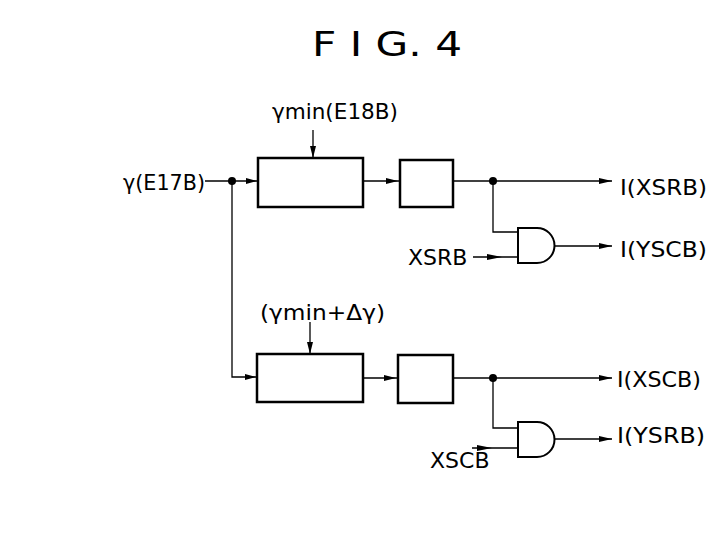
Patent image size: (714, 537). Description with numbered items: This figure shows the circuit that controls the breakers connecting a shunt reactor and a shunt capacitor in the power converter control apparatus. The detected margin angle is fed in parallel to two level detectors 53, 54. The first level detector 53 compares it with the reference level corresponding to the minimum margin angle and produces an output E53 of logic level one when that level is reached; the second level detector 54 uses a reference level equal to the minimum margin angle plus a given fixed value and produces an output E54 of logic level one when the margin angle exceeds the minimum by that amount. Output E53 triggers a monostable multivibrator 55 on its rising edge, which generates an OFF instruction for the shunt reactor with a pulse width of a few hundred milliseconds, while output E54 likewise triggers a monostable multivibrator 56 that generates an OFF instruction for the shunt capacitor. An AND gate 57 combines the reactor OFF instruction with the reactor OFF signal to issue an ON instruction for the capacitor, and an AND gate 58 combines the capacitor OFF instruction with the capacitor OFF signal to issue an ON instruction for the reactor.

The level detector 53 is at (310, 207).
The level detector 54 is at (303, 402).
The monostable multivibrator 55 is at (436, 160).
The monostable multivibrator 56 is at (430, 355).
The AND gate 57 is at (542, 258).
The AND gate 58 is at (543, 451).
The output of level detector E53 is at (377, 184).
The output of level detector E54 is at (378, 382).